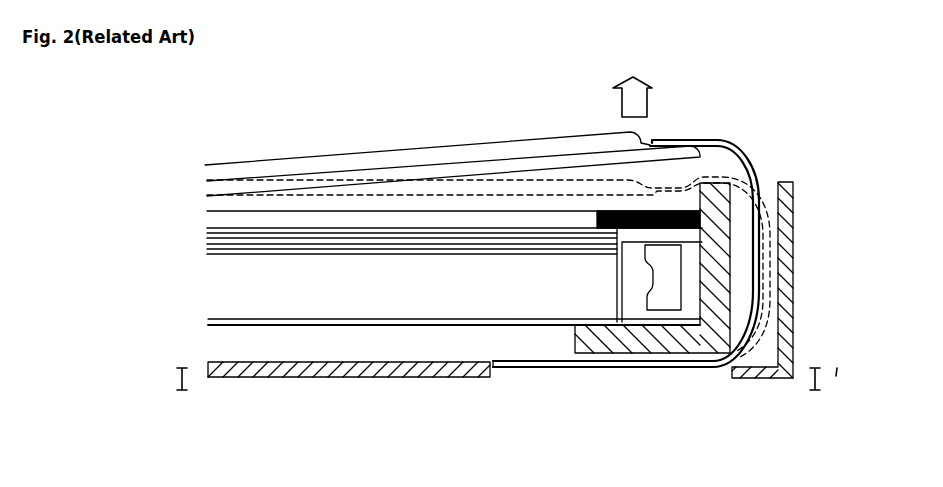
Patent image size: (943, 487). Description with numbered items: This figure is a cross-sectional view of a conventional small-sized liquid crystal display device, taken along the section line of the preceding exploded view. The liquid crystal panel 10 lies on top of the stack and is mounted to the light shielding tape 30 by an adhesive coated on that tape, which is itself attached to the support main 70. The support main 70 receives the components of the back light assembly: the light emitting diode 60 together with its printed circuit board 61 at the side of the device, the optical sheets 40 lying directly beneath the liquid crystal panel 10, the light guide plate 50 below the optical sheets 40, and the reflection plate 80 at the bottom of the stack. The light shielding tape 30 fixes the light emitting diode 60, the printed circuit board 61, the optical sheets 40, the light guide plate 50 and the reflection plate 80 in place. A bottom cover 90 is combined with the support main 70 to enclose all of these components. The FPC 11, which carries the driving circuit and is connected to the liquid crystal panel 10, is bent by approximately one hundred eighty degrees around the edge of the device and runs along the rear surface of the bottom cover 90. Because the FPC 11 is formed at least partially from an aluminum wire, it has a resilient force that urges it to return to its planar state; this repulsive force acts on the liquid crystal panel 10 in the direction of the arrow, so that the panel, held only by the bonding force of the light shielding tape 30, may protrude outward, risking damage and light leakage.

The liquid crystal panel 10 is at (205, 165).
The FPC 11 is at (543, 368).
The light shielding tape 30 is at (596, 222).
The optical sheets 40 is at (205, 228).
The light guide plate 50 is at (212, 283).
The light emitting diode 60 is at (663, 310).
The printed circuit board 61 is at (630, 240).
The support main 70 is at (728, 278).
The reflection plate 80 is at (208, 322).
The bottom cover 90 is at (795, 318).